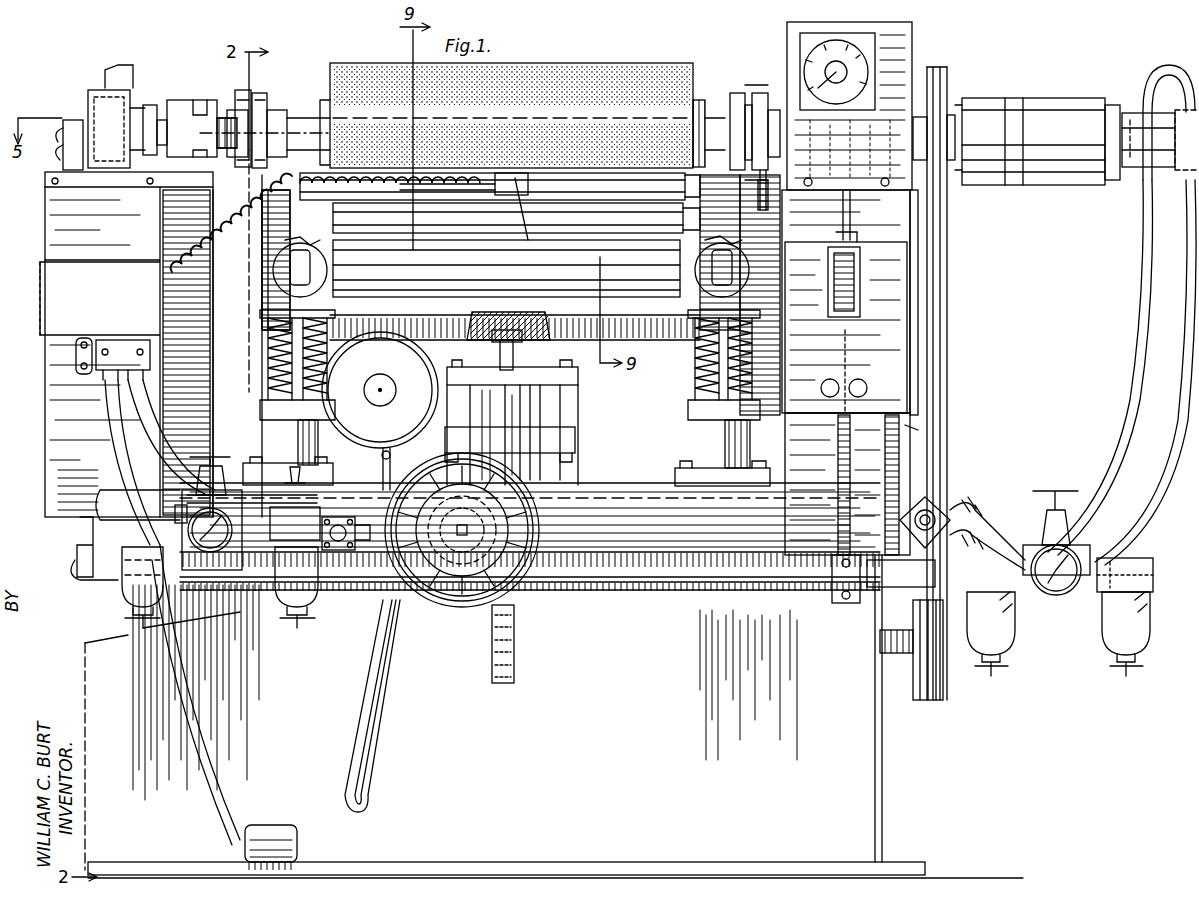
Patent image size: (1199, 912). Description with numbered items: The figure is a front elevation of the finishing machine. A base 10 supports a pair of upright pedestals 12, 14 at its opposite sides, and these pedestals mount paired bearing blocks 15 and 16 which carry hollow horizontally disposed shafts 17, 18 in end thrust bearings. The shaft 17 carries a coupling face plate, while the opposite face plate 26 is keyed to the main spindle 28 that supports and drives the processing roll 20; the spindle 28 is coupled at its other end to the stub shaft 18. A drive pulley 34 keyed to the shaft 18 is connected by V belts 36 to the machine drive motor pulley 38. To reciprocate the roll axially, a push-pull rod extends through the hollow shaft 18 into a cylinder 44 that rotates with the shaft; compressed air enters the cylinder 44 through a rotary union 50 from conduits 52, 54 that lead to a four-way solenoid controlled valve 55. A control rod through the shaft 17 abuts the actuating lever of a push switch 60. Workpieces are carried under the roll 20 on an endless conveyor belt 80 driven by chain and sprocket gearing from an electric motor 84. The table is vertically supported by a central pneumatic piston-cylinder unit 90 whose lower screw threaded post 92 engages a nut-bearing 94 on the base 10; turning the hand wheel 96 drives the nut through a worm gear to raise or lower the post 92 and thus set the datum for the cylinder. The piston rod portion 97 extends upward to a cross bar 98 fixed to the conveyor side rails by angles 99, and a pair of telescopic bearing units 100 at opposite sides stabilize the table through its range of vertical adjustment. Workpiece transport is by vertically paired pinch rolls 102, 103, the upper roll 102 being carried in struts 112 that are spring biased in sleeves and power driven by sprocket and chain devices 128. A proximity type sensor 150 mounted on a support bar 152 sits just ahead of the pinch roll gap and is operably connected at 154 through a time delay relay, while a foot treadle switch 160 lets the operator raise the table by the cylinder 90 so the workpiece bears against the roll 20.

The base 10 is at (882, 764).
The pedestal 12 is at (205, 348).
The pedestal 14 is at (905, 431).
The bearing block 15 is at (143, 110).
The bearing block 16 is at (787, 90).
The hollow shaft 17 is at (222, 118).
The stub shaft 18 is at (774, 110).
The processing roll 20 is at (356, 66).
The face plate 26 is at (257, 100).
The main spindle 28 is at (300, 118).
The drive pulley 34 is at (947, 200).
The V belts 36 is at (940, 282).
The motor pulley 38 is at (943, 690).
The cylinder 44 is at (1055, 192).
The rotary union 50 is at (1133, 185).
The conduit 52 is at (1140, 276).
The conduit 54 is at (1188, 263).
The solenoid controlled valve 55 is at (945, 505).
The push switch 60 is at (72, 120).
The conveyor belt 80 is at (650, 257).
The electric motor 84 is at (400, 360).
The pneumatic piston-cylinder unit 90 is at (560, 430).
The screw threaded post 92 is at (515, 650).
The nut-bearing 94 is at (545, 582).
The hand wheel 96 is at (435, 605).
The piston rod portion 97 is at (515, 352).
The cross bar 98 is at (448, 333).
The angles 99 is at (325, 340).
The telescopic bearing units 100 is at (305, 450).
The upper pinch roll 102 is at (602, 175).
The lower pinch roll 103 is at (650, 219).
The strut 112 is at (742, 231).
The sprocket and chain devices 128 is at (262, 240).
The proximity type sensor 150 is at (526, 213).
The support bar 152 is at (402, 192).
The connection 154 is at (245, 220).
The foot treadle switch 160 is at (272, 825).